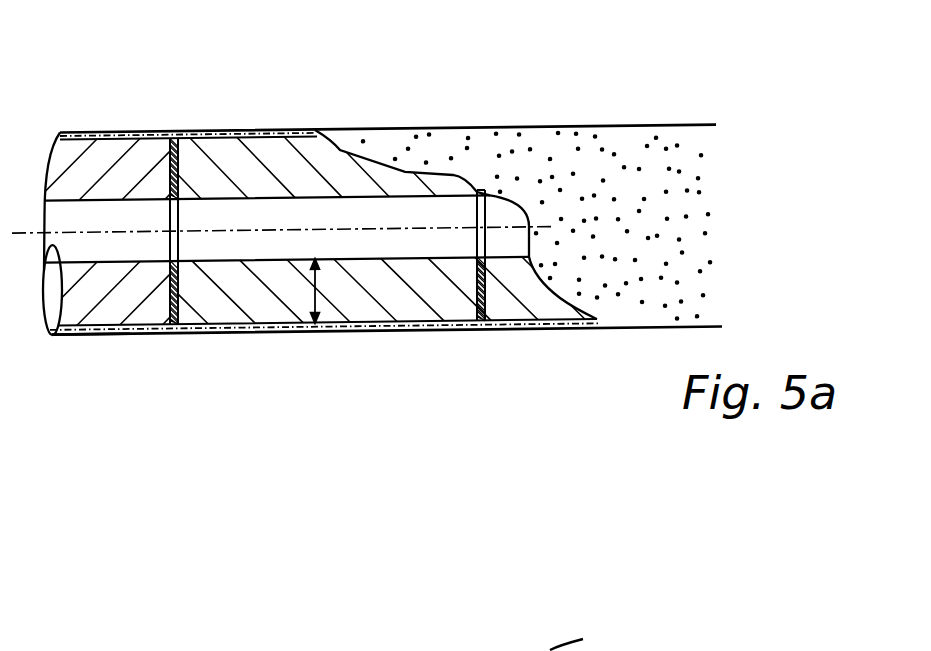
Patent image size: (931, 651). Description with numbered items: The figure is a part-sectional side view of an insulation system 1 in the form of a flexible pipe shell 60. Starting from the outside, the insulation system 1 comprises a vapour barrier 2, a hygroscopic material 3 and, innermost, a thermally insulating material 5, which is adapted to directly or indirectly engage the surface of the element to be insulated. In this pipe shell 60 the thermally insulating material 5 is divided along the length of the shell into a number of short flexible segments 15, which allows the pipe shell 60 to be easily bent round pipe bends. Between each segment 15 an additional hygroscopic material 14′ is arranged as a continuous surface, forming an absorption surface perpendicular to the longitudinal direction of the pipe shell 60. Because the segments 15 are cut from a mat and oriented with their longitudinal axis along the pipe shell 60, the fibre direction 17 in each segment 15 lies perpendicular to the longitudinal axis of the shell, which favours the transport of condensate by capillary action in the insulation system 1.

The insulation system 1 is at (548, 126).
The vapour barrier 2 is at (263, 333).
The hygroscopic material 3 is at (93, 334).
The thermally insulating material 5 is at (131, 299).
The additional hygroscopic material 14′ is at (178, 305).
The segments 15 is at (108, 161).
The fibre direction 17 is at (333, 291).
The flexible pipe shell 60 is at (447, 127).